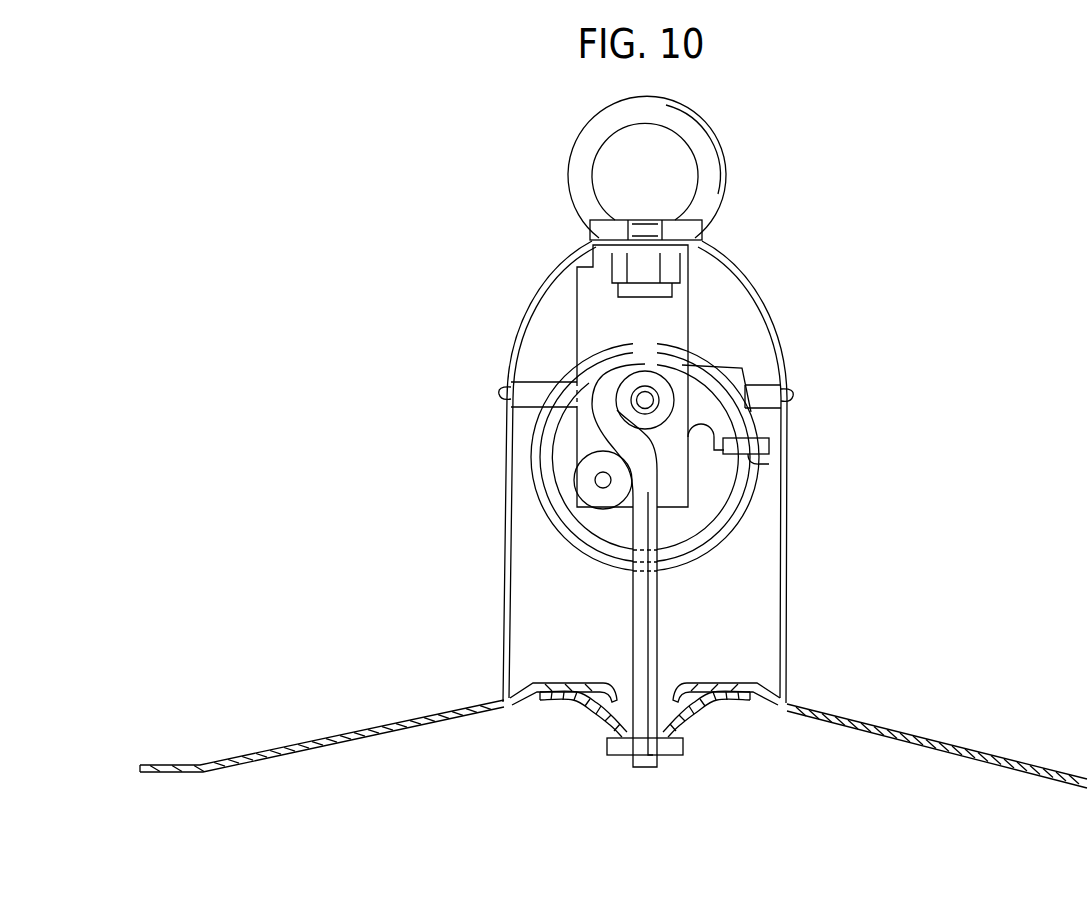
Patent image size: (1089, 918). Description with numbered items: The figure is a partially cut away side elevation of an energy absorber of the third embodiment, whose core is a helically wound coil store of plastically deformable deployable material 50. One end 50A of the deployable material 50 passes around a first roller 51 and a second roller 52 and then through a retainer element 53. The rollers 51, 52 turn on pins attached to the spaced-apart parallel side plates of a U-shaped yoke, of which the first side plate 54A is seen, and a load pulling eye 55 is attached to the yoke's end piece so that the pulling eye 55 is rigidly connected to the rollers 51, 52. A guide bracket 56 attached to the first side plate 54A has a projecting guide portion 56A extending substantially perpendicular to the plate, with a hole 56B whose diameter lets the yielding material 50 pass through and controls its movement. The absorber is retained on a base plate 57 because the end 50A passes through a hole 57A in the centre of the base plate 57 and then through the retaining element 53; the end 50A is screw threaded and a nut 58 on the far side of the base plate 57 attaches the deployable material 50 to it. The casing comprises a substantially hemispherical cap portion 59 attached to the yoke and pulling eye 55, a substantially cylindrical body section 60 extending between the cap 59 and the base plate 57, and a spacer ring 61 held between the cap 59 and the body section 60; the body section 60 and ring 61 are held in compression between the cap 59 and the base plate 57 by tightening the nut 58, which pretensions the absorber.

The deployable material 50 is at (738, 506).
The end of the deployable material 50A is at (645, 768).
The first roller 51 is at (636, 386).
The second roller 52 is at (603, 500).
The retainer element 53 is at (580, 698).
The first side plate 54A is at (673, 313).
The load pulling eye 55 is at (728, 155).
The guide bracket 56 is at (738, 379).
The projecting guide portion 56A is at (770, 445).
The hole 56B is at (762, 458).
The base plate 57 is at (349, 737).
The hole in the base plate 57A is at (663, 702).
The nut 58 is at (618, 748).
The hemispherical cap portion 59 is at (551, 265).
The cylindrical body section 60 is at (505, 600).
The spacer ring 61 is at (499, 393).